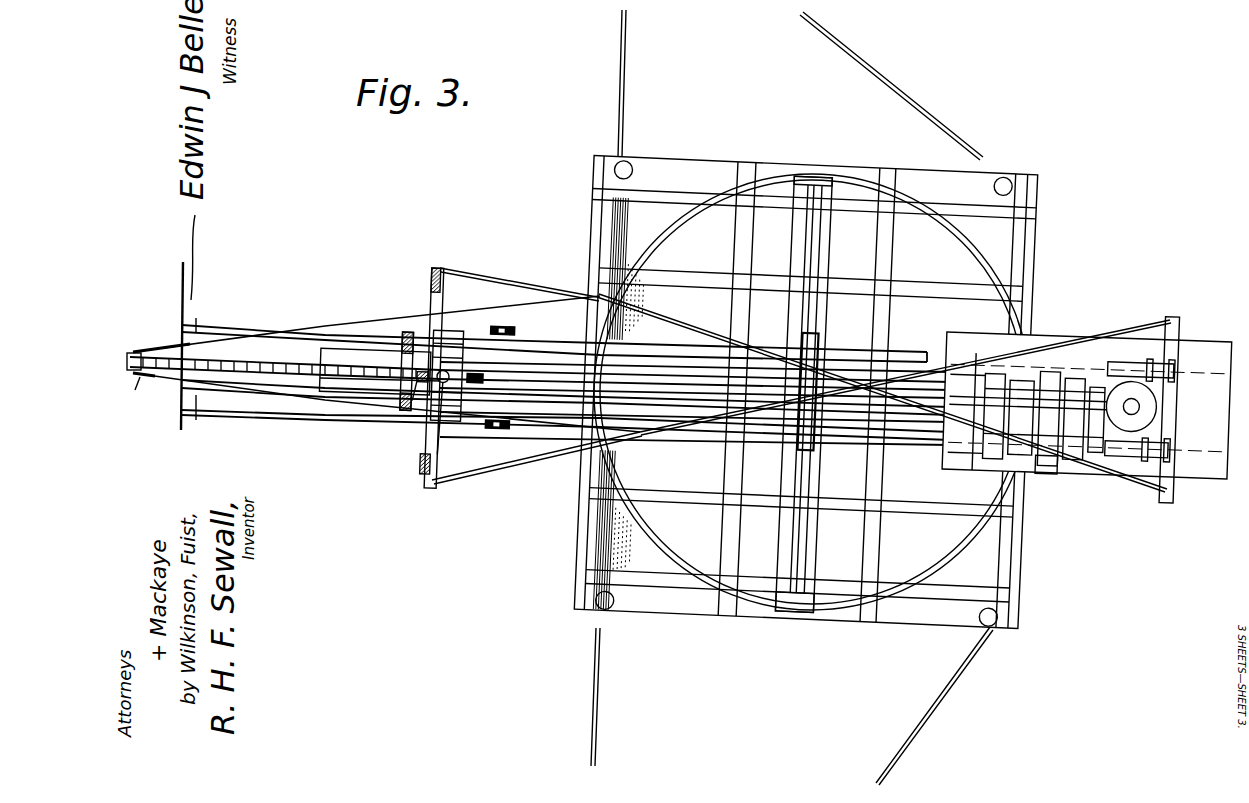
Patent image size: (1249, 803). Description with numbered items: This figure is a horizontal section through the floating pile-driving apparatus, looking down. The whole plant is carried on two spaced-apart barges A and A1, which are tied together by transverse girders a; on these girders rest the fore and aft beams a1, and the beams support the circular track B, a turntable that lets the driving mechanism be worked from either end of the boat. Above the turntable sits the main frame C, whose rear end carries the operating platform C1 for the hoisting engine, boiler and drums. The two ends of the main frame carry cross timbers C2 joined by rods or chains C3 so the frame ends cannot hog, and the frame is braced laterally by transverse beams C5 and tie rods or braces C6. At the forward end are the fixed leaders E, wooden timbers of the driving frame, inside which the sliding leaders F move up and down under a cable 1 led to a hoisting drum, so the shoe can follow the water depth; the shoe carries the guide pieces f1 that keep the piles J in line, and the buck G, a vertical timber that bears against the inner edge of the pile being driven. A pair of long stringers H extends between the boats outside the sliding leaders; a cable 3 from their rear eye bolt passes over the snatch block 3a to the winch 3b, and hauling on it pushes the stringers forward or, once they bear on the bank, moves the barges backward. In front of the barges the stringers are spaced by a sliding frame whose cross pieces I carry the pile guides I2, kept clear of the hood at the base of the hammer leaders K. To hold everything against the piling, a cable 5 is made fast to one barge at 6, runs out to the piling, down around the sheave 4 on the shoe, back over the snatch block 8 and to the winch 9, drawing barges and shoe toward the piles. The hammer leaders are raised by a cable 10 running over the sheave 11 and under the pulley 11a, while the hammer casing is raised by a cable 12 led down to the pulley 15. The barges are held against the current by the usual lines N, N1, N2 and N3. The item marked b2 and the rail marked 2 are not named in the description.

The barge A is at (990, 569).
The barge A1 is at (1010, 247).
The transverse girders a is at (740, 167).
The fore and aft beams a1 is at (698, 276).
The circular track B is at (993, 284).
The main frame C is at (900, 352).
The operating platform C1 is at (1200, 343).
The cross timbers C2 is at (1172, 320).
The rods or chains C3 is at (1150, 485).
The transverse beams C5 is at (804, 177).
The tie rods or braces C6 is at (818, 193).
The line N is at (630, 46).
The line N1 is at (878, 68).
The line N2 is at (944, 737).
The line N3 is at (596, 664).
The cable 1 is at (531, 427).
The upper rail 2 is at (535, 354).
The cable 3 is at (682, 400).
The snatch block 3a is at (478, 388).
The winch 3b is at (1050, 456).
The sheave 4 is at (155, 348).
The cable 5 is at (262, 334).
The fastening point 6 is at (592, 296).
The snatch block 8 is at (147, 378).
The winch 9 is at (1000, 457).
The cable 10 is at (517, 378).
The sheave 11 is at (413, 408).
The pulley 11a is at (427, 412).
The cable 12 is at (527, 413).
The pulley 15 is at (425, 420).
The fixed leaders E is at (403, 348).
The sliding leaders F is at (400, 341).
The buck G is at (408, 333).
The stringers H is at (197, 333).
The cross pieces I is at (488, 329).
The pile guides I2 is at (330, 392).
The piles J is at (279, 366).
The hammer leaders K is at (196, 401).
The cross plate b2 is at (433, 495).
The guide pieces f1 is at (322, 384).